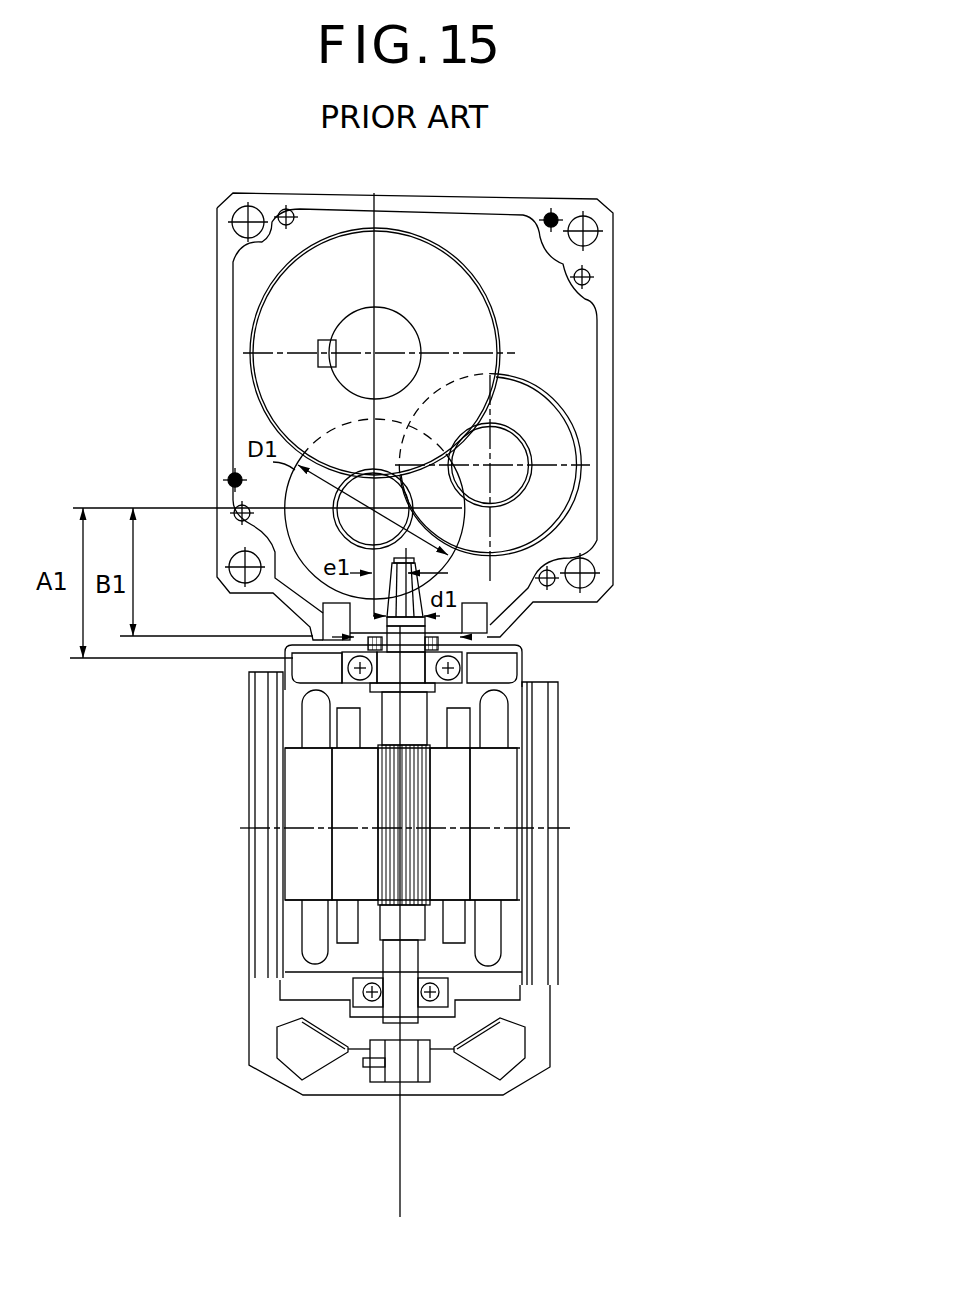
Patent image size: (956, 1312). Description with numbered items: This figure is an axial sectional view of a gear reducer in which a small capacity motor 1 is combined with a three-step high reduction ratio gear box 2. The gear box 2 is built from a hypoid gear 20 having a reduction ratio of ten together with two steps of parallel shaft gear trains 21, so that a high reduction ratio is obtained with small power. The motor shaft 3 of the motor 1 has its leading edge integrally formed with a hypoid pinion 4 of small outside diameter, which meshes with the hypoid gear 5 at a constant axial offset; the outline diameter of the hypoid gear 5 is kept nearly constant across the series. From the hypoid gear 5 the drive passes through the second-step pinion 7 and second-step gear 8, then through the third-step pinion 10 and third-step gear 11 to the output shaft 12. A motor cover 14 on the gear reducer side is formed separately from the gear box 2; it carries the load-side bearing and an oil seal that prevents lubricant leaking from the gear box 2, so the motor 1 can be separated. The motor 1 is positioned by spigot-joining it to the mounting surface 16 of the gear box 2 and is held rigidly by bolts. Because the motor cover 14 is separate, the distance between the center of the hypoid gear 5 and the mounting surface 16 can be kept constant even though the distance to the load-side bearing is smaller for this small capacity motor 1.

The small capacity motor 1 is at (538, 890).
The gear box 2 is at (600, 263).
The motor shaft 3 is at (410, 717).
The hypoid pinion 4 is at (428, 574).
The hypoid gear 5 is at (226, 481).
The second-step pinion 7 is at (360, 465).
The second-step gear 8 is at (558, 458).
The third-step pinion 10 is at (532, 438).
The third-step gear 11 is at (477, 345).
The output shaft 12 is at (403, 345).
The motor cover 14 is at (275, 652).
The mounting surface 16 is at (524, 660).
The hypoid gear 20 is at (476, 539).
The parallel shaft gear trains 21 is at (534, 373).